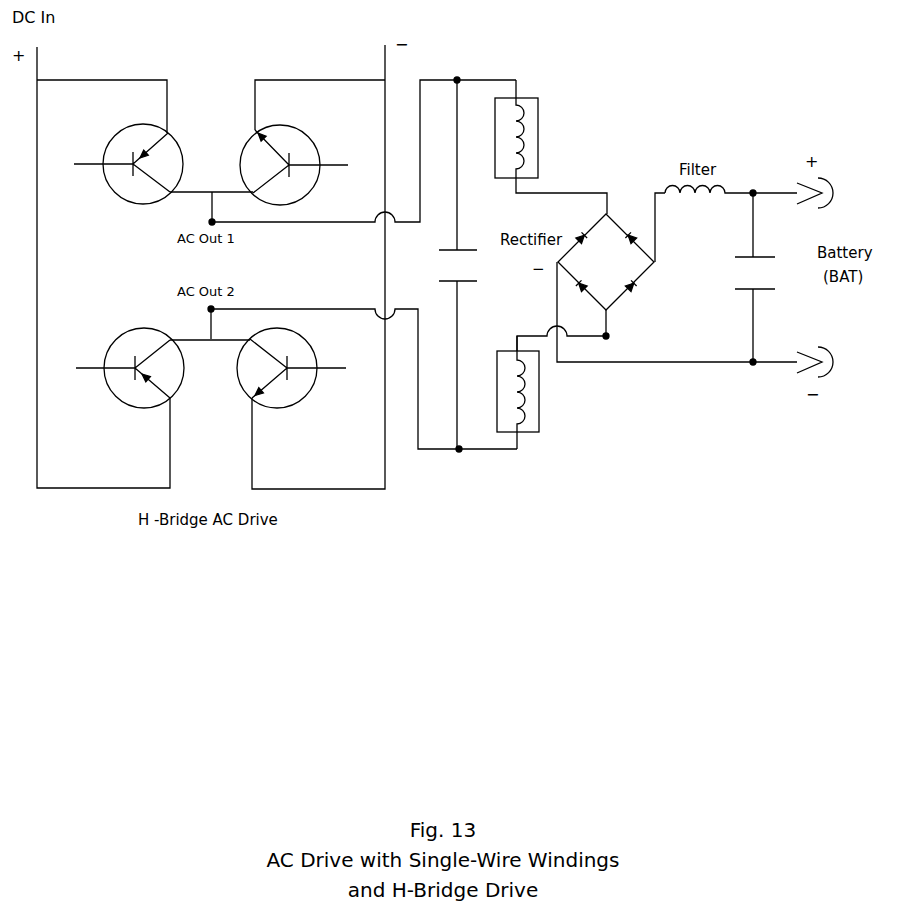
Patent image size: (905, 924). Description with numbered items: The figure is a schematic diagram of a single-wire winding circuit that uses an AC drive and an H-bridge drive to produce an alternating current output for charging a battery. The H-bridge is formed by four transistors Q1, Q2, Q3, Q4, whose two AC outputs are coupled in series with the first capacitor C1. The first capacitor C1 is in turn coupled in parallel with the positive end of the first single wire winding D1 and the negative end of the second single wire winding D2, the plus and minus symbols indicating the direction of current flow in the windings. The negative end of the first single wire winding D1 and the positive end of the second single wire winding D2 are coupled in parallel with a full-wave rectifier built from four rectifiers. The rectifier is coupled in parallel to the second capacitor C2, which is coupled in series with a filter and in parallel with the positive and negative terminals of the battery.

The transistor Q1 is at (291, 372).
The transistor Q2 is at (128, 161).
The transistor Q3 is at (294, 159).
The transistor Q4 is at (129, 376).
The first capacitor C1 is at (442, 264).
The second capacitor C2 is at (737, 277).
The first single wire winding D1 is at (544, 147).
The second single wire winding D2 is at (524, 392).